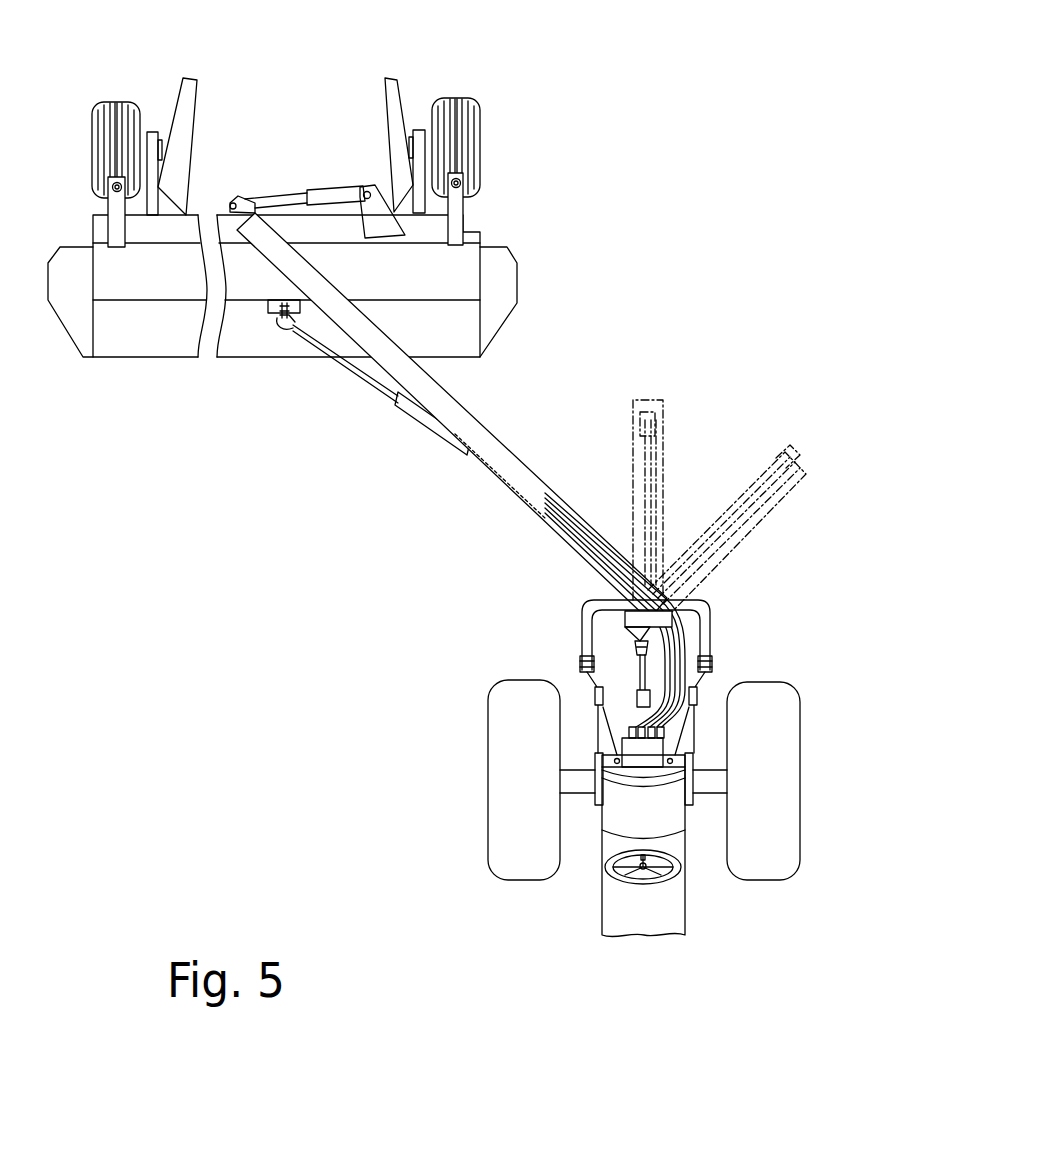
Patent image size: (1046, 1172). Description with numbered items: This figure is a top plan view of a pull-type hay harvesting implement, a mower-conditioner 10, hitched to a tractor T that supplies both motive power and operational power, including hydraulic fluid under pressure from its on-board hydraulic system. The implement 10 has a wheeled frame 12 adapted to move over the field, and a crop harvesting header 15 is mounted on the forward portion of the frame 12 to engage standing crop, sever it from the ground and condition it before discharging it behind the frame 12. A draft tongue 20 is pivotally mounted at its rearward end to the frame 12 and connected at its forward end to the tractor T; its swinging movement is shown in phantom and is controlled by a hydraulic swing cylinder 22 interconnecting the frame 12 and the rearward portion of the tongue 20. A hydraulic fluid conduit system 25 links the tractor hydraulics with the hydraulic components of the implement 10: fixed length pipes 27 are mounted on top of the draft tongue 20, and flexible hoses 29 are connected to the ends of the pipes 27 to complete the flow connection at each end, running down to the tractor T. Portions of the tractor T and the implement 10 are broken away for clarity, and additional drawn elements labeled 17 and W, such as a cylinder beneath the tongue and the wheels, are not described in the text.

The mower-conditioner 10 is at (597, 150).
The wheeled frame 12 is at (427, 223).
The crop harvesting header 15 is at (202, 406).
The hydraulic lift cylinder 17 is at (410, 410).
The draft tongue 20 is at (453, 405).
The hydraulic swing cylinder 22 is at (343, 193).
The hydraulic fluid conduit system 25 is at (616, 629).
The fixed length pipes 27 is at (543, 537).
The flexible hoses 29 is at (680, 637).
The tractor T is at (612, 913).
The wheels W is at (500, 853).